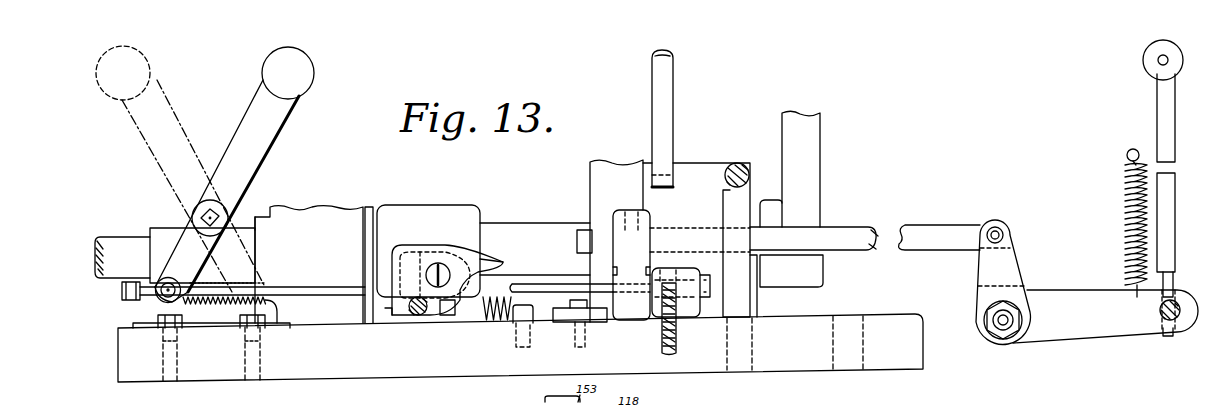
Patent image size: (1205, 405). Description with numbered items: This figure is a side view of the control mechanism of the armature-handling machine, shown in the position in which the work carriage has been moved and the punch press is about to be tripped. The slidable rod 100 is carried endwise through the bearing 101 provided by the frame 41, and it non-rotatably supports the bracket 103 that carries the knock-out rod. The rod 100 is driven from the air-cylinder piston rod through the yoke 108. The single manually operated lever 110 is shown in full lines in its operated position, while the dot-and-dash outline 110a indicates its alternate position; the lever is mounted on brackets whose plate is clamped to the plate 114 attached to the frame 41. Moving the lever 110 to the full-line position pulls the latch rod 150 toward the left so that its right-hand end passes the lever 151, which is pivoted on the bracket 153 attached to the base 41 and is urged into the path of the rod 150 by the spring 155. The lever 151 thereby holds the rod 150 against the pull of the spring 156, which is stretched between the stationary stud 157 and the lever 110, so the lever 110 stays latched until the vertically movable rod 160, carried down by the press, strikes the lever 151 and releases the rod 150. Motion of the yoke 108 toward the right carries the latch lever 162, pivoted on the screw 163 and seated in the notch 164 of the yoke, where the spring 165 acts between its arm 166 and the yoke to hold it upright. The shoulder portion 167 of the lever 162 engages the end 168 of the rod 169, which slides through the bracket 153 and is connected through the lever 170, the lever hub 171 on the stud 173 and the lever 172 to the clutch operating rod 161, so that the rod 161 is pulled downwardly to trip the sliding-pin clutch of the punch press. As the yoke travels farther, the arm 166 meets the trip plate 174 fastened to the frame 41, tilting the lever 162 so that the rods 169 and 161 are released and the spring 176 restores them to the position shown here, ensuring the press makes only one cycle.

The frame 41 is at (790, 362).
The rod 100 is at (548, 226).
The bearing 101 is at (368, 225).
The bracket 103 is at (808, 152).
The yoke 108 is at (398, 212).
The manually operated lever 110 is at (302, 73).
The hand lever alternate position 110a is at (97, 80).
The plate 114 is at (133, 325).
The latch rod 150 is at (298, 289).
The lever 151 is at (676, 268).
The bracket 153 is at (618, 211).
The spring 155 is at (675, 315).
The spring 156 is at (215, 305).
The stationary stud 157 is at (516, 320).
The vertically movable rod 160 is at (673, 112).
The clutch operating rod 161 is at (1158, 108).
The latch lever 162 is at (492, 265).
The screw 163 is at (443, 270).
The notch 164 is at (400, 303).
The spring 165 is at (418, 318).
The arm 166 is at (445, 316).
The shoulder portion 167 is at (492, 252).
The rod end 168 is at (577, 243).
The rod 169 is at (843, 236).
The lever 170 is at (1012, 262).
The lever hub 171 is at (983, 288).
The lever 172 is at (1060, 298).
The stud 173 is at (990, 333).
The trip plate 174 is at (596, 318).
The spring 176 is at (1126, 197).